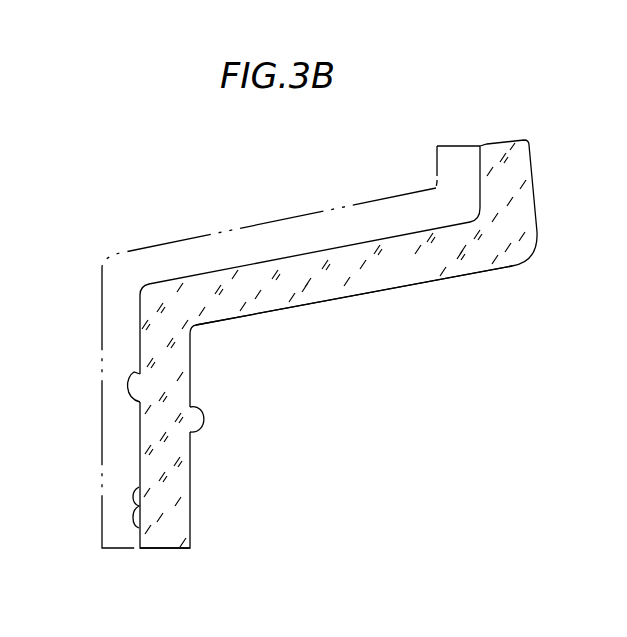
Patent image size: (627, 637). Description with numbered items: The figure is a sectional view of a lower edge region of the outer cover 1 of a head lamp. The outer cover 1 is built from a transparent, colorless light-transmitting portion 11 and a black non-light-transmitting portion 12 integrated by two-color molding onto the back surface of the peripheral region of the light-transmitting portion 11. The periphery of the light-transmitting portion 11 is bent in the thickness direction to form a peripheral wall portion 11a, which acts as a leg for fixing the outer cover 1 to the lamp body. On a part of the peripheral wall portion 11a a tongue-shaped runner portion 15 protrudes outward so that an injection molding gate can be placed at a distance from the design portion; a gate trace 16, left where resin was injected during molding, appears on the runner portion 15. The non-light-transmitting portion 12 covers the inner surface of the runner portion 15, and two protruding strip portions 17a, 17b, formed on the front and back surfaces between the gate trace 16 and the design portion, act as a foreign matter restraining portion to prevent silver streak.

The outer cover 1 is at (340, 316).
The light-transmitting portion 11 is at (510, 180).
The peripheral wall portion 11a is at (398, 266).
The non-light-transmitting portion 12 is at (212, 237).
The runner portion 15 is at (190, 528).
The gate trace 16 is at (132, 504).
The protruding strip portion 17a is at (206, 418).
The protruding strip portion 17b is at (128, 390).